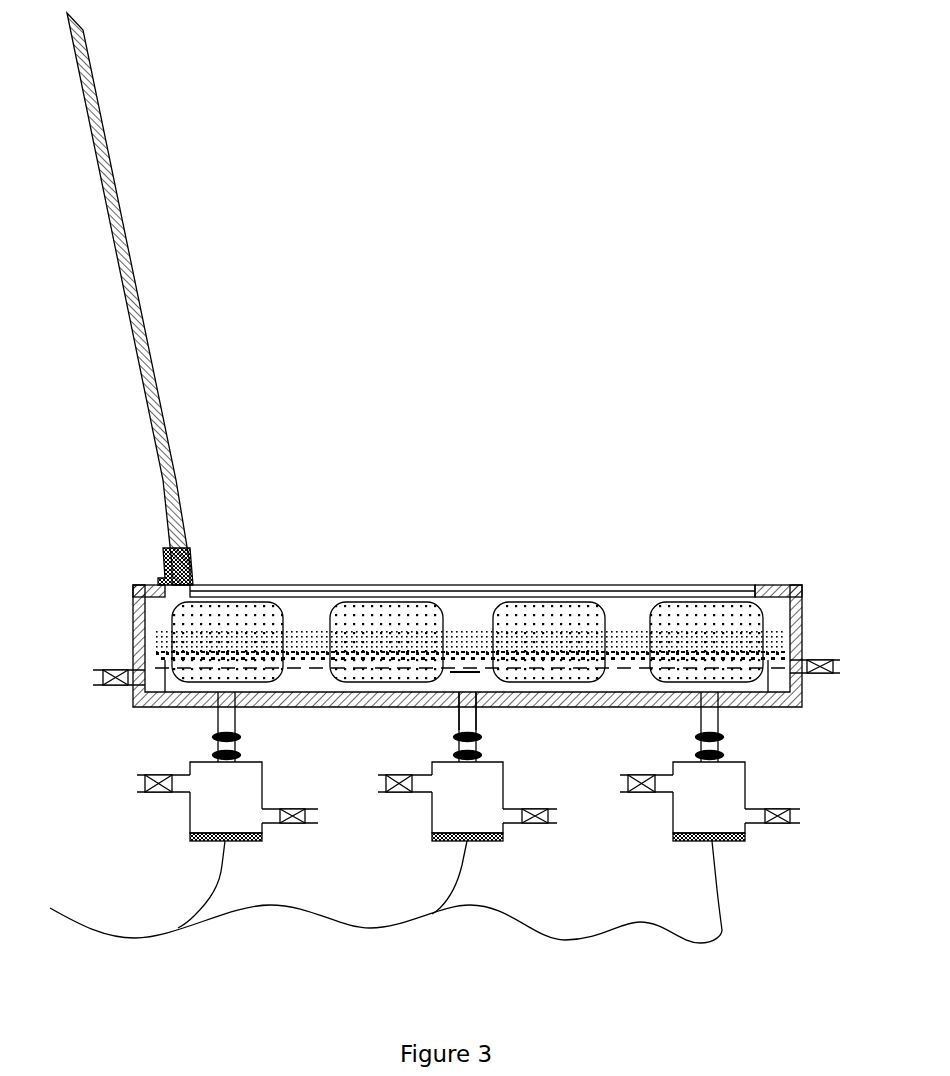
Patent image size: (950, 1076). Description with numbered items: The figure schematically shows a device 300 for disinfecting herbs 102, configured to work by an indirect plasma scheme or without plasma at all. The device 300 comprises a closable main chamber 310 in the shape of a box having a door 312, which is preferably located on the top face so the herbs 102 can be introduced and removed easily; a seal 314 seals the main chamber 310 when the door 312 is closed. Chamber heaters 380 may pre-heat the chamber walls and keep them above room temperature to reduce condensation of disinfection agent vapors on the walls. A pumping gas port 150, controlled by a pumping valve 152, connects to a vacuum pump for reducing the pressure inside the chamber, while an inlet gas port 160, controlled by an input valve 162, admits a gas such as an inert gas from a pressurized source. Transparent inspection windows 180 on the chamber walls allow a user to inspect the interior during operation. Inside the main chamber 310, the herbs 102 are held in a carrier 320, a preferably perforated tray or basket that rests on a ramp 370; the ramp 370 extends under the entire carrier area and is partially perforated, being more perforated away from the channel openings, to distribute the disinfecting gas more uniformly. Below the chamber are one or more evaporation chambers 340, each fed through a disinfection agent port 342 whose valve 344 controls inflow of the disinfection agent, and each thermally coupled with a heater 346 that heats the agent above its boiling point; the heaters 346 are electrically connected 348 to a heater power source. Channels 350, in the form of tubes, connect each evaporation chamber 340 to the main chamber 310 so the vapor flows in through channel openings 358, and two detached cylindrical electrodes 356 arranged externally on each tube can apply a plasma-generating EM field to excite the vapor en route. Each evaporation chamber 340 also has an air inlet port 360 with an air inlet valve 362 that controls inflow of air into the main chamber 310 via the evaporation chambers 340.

The device for disinfecting herbs 300 is at (607, 147).
The door 312 is at (127, 304).
The chamber heaters 380 is at (92, 78).
The main chamber 310 is at (778, 592).
The seal 314 is at (750, 590).
The pumping gas port 150 is at (100, 668).
The pumping valve 152 is at (93, 680).
The inlet gas port 160 is at (812, 662).
The input valve 162 is at (840, 668).
The carrier 320 is at (308, 632).
The ramp 370 is at (463, 670).
The herbs 102 is at (612, 632).
The transparent inspection windows 180 is at (245, 608).
The electrodes 356 is at (243, 737).
The channel openings 358 is at (466, 706).
The channels 350 is at (480, 720).
The evaporation chambers 340 is at (188, 765).
The valve 344 is at (137, 778).
The disinfection agent port 342 is at (137, 793).
The air inlet port 360 is at (272, 805).
The air inlet valve 362 is at (318, 815).
The heater 346 is at (250, 842).
The electrical connection 348 is at (642, 922).